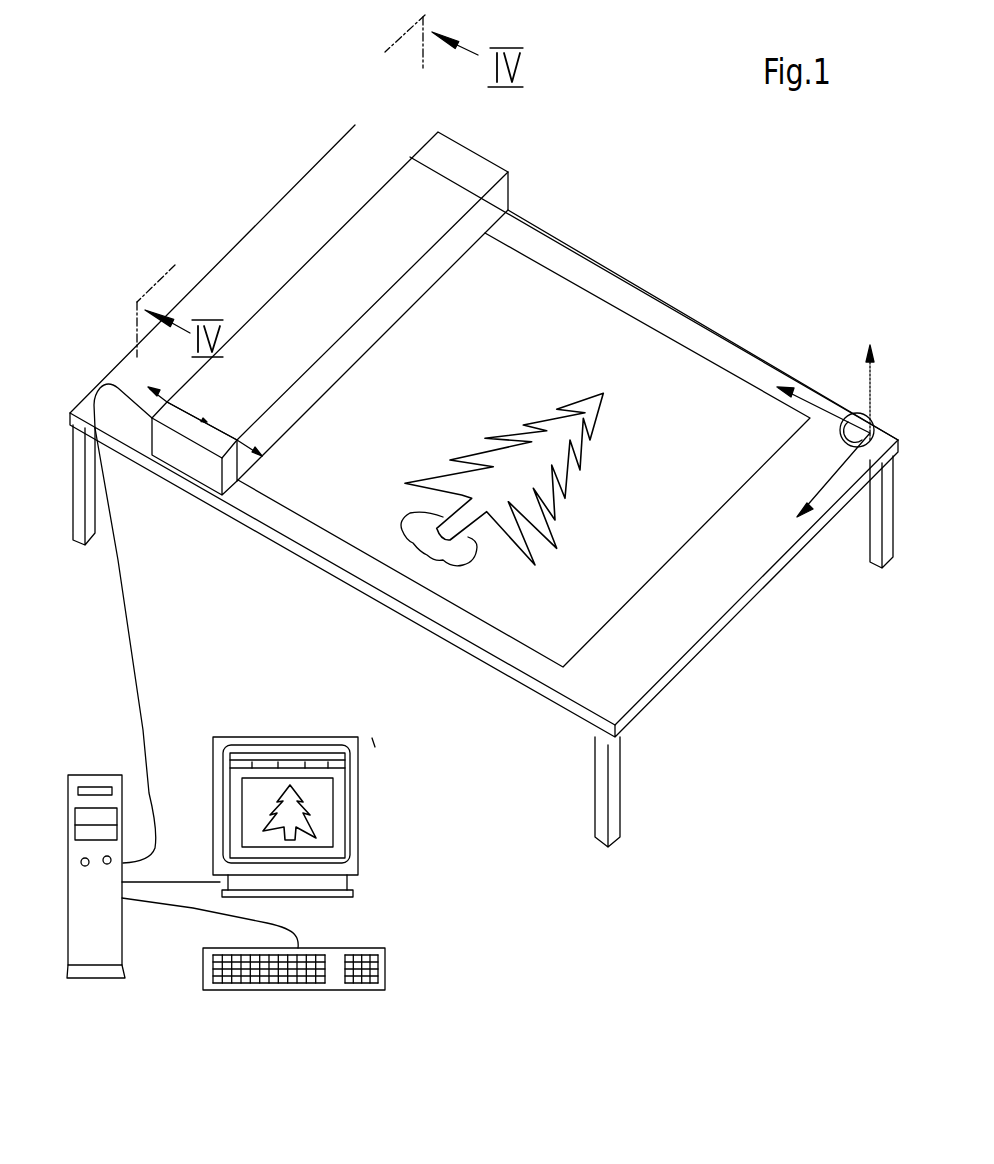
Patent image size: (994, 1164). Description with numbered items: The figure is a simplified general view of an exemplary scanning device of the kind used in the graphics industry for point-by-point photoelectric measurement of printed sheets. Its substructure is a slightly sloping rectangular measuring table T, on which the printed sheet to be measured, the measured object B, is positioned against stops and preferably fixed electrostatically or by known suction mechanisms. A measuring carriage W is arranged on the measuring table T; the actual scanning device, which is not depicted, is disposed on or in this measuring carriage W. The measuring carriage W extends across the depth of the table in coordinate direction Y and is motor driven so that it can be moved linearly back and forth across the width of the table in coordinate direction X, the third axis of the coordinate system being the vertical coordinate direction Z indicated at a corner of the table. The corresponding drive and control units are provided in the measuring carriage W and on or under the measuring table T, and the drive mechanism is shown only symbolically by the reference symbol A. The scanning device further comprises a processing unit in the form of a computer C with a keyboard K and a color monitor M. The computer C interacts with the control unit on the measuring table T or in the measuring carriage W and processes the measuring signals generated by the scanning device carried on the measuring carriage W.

The measuring table T is at (648, 657).
The measured object B is at (638, 570).
The measuring carriage W is at (460, 177).
The drive mechanism A is at (207, 467).
The computer C is at (106, 780).
The color monitor M is at (357, 852).
The keyboard K is at (385, 968).
The coordinate direction x X is at (814, 404).
The coordinate direction y Y is at (824, 488).
The coordinate direction z Z is at (857, 384).